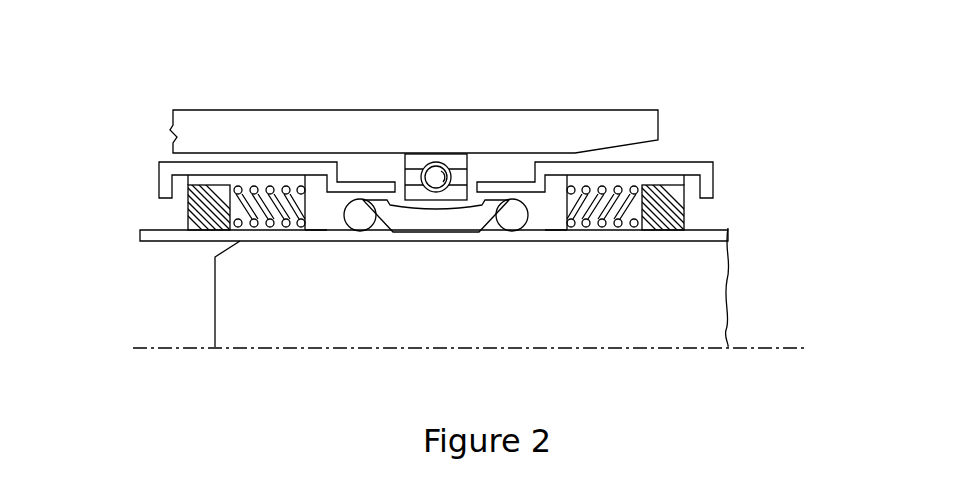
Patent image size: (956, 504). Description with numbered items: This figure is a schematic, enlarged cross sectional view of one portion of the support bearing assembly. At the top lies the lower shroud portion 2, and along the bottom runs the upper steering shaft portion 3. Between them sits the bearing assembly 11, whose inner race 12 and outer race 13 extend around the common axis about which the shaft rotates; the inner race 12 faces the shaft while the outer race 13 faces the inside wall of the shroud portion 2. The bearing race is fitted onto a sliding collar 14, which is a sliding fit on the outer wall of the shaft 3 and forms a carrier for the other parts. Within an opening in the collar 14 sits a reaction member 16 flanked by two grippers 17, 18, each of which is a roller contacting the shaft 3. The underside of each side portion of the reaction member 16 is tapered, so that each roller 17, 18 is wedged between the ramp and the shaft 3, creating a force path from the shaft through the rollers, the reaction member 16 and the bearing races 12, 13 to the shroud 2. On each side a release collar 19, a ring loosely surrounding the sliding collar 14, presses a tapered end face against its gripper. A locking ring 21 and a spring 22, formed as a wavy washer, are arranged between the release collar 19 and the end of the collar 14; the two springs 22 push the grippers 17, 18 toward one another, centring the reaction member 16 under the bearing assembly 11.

The lower shroud portion 2 is at (625, 133).
The upper steering shaft portion 3 is at (710, 307).
The bearing assembly 11 is at (452, 160).
The inner race 12 is at (405, 161).
The outer race 13 is at (423, 158).
The sliding collar 14 is at (152, 236).
The reaction member 16 is at (428, 218).
The gripper 17 is at (362, 216).
The gripper 18 is at (513, 218).
The release collar 19 is at (318, 224).
The locking ring 21 is at (189, 186).
The spring 22 is at (266, 191).